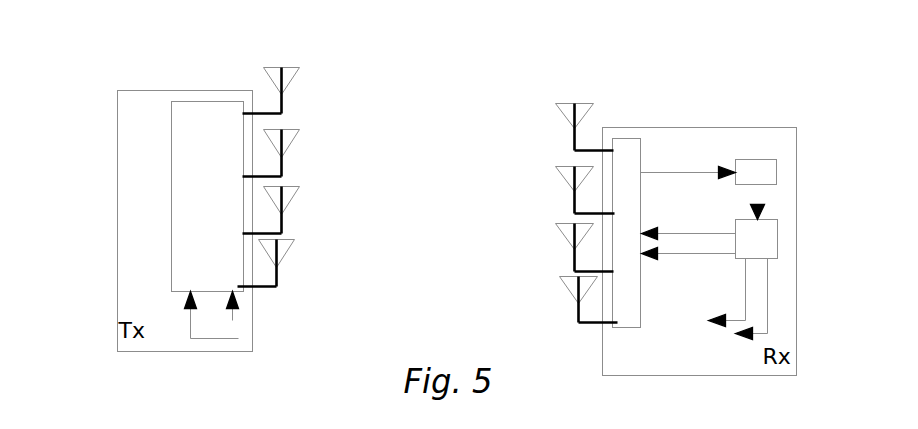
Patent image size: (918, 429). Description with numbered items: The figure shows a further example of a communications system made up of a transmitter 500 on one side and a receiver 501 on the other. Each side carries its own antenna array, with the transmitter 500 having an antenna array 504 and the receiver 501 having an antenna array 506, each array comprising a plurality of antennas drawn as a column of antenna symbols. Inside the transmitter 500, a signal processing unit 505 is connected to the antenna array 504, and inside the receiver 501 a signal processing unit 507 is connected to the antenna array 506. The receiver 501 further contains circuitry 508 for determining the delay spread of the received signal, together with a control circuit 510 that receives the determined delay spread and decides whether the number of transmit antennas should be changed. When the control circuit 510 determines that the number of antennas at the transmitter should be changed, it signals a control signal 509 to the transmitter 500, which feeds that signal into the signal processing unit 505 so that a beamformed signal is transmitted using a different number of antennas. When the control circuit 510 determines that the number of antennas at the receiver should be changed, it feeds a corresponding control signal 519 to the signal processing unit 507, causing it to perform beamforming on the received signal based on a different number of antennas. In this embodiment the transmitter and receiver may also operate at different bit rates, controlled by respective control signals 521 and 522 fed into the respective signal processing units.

The transmitter 500 is at (165, 196).
The receiver 501 is at (700, 224).
The antenna array 504 is at (328, 177).
The signal processing unit 505 is at (136, 197).
The antenna array 506 is at (526, 213).
The signal processing unit 507 is at (674, 281).
The circuitry for determining the delay spread 508 is at (758, 163).
The control signal 509 is at (522, 307).
The control circuit 510 is at (806, 222).
The control signal 519 is at (689, 217).
The control signal 521 is at (486, 303).
The control signal 522 is at (689, 269).